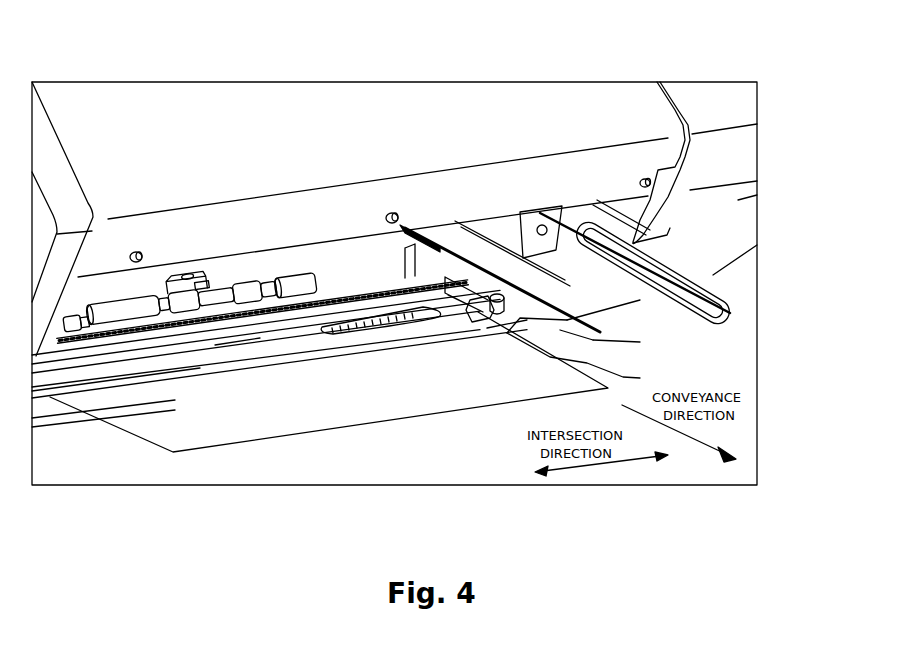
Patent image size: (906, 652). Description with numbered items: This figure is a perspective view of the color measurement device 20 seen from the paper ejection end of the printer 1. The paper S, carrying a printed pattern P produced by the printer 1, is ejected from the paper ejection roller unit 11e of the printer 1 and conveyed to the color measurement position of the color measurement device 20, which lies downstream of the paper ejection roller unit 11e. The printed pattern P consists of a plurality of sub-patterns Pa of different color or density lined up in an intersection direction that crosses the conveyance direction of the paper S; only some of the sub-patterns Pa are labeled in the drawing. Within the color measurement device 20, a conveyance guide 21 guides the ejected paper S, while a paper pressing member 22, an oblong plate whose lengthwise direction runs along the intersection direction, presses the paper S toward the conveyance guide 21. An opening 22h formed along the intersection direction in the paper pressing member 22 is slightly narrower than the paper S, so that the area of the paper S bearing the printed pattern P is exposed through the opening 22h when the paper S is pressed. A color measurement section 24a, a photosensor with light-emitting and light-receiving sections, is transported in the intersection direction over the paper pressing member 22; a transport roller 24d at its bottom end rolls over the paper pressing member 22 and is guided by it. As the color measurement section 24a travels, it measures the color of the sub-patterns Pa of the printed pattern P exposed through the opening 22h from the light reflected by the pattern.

The printer 1 is at (738, 203).
The color measurement device 20 is at (370, 95).
The paper ejection roller unit 11e is at (307, 270).
The printed pattern P is at (412, 292).
The sub-patterns Pa is at (325, 328).
The conveyance guide 21 is at (567, 340).
The paper pressing member 22 is at (119, 372).
The opening 22h is at (223, 343).
The color measurement section 24a is at (667, 243).
The transport roller 24d is at (478, 322).
The paper S is at (190, 434).